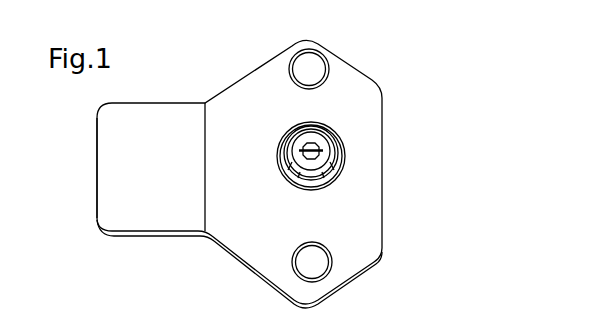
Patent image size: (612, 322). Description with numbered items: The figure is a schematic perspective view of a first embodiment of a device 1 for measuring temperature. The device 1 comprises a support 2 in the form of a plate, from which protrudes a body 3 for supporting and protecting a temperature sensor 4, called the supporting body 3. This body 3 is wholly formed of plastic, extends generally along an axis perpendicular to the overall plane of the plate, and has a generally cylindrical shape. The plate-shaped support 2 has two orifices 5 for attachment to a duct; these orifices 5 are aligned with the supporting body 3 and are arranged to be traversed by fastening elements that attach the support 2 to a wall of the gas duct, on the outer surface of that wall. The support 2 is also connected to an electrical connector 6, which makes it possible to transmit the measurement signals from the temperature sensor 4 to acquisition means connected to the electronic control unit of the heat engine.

The device for measuring temperature 1 is at (270, 154).
The support 2 is at (372, 170).
The supporting body 3 is at (320, 190).
The temperature sensor 4 is at (315, 148).
The orifices 5 is at (313, 57).
The electrical connector 6 is at (102, 195).